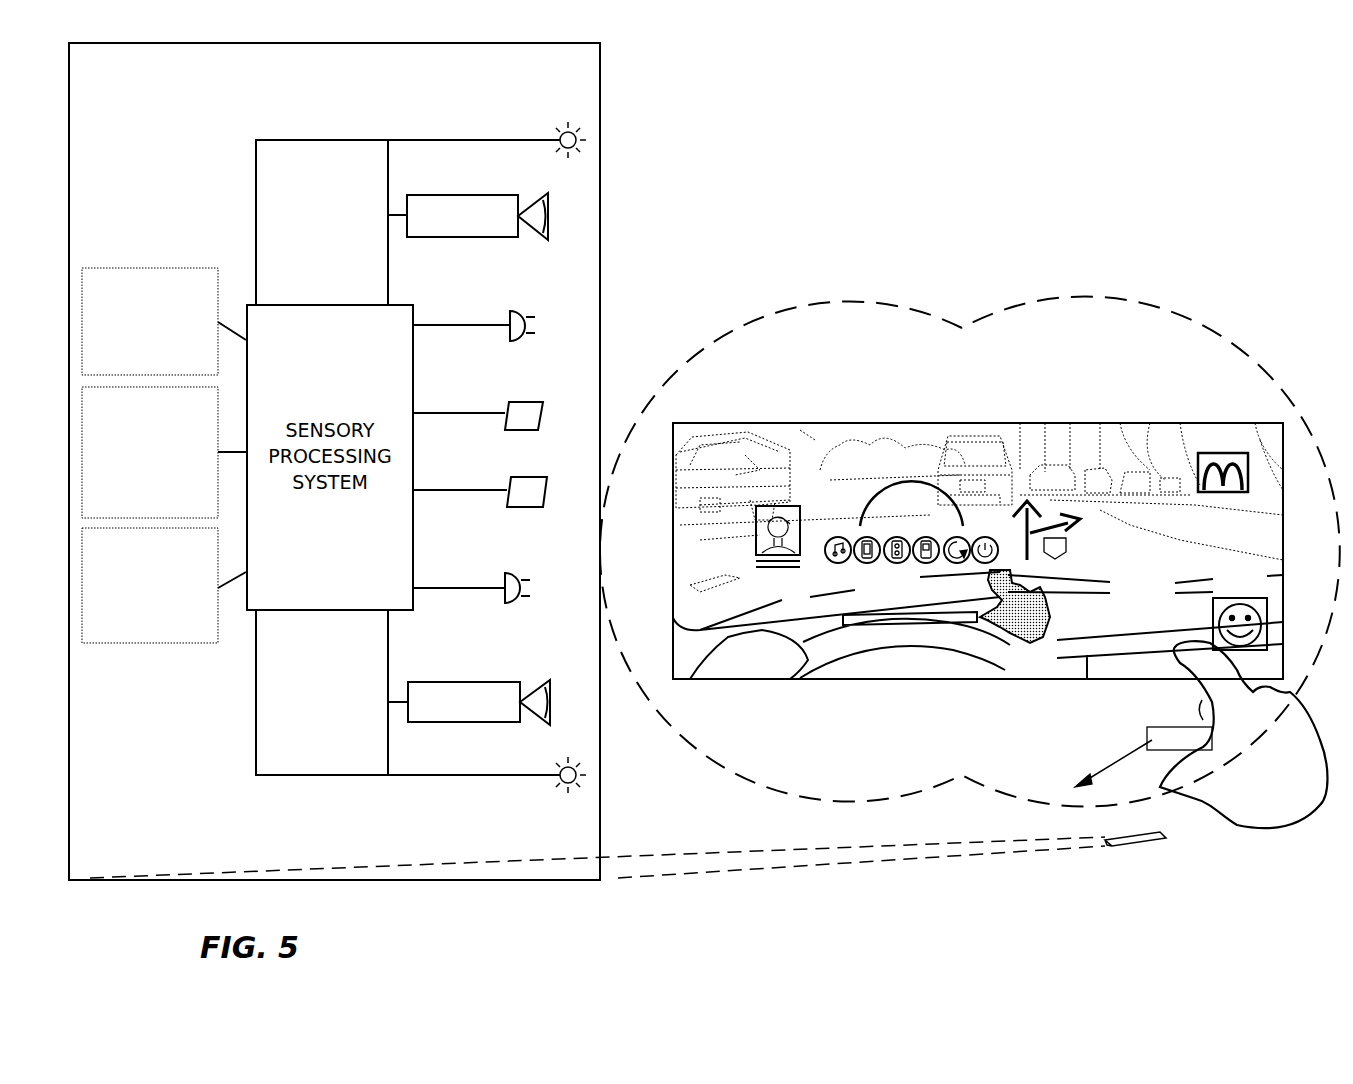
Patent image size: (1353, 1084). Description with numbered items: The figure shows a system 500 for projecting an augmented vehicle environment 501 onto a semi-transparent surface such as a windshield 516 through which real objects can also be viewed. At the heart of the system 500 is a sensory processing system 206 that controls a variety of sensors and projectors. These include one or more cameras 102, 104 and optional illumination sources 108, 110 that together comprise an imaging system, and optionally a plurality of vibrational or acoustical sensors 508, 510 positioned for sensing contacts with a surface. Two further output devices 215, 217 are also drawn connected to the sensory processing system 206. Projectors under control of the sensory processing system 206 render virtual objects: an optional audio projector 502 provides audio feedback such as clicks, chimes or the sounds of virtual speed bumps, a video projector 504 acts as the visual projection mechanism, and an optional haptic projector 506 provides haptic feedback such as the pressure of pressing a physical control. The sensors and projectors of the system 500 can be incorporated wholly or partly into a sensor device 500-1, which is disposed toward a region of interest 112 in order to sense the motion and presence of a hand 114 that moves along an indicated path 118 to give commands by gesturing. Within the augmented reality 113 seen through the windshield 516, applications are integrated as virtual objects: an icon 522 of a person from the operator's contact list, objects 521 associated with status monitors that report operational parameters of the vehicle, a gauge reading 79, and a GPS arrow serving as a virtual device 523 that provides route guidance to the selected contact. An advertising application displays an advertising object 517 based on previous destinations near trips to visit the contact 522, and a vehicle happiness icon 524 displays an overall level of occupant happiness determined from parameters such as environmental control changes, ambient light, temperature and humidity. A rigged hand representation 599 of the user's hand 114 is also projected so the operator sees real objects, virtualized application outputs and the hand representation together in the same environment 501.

The system 500 is at (121, 128).
The sensor device 500-1 is at (1130, 843).
The sensory processing system 206 is at (312, 305).
The camera 102 is at (447, 193).
The camera 104 is at (465, 724).
The illumination source 108 is at (556, 147).
The illumination source 110 is at (560, 784).
The first speaker 215 is at (508, 312).
The second speaker 217 is at (507, 571).
The vibrational sensor 508 is at (513, 400).
The vibrational sensor 510 is at (517, 473).
The optional audio projector 502 is at (132, 374).
The video projector 504 is at (132, 497).
The optional haptic projector 506 is at (132, 635).
The augmented vehicle environment 501 is at (972, 368).
The region of interest 112 is at (1166, 708).
The augmented reality 113 is at (716, 450).
The application icon 522 is at (794, 596).
The objects representing an operational parameter of the vehicle 521 is at (903, 596).
The gauge reading 79 is at (911, 504).
The virtual device 523 is at (1142, 530).
The windshield 516 is at (1162, 593).
The advertising object 517 is at (1243, 440).
The vehicle happiness icon 524 is at (1270, 615).
The rigged hand representation 599 is at (1047, 633).
The hand 114 is at (1273, 778).
The indicated path 118 is at (1143, 757).